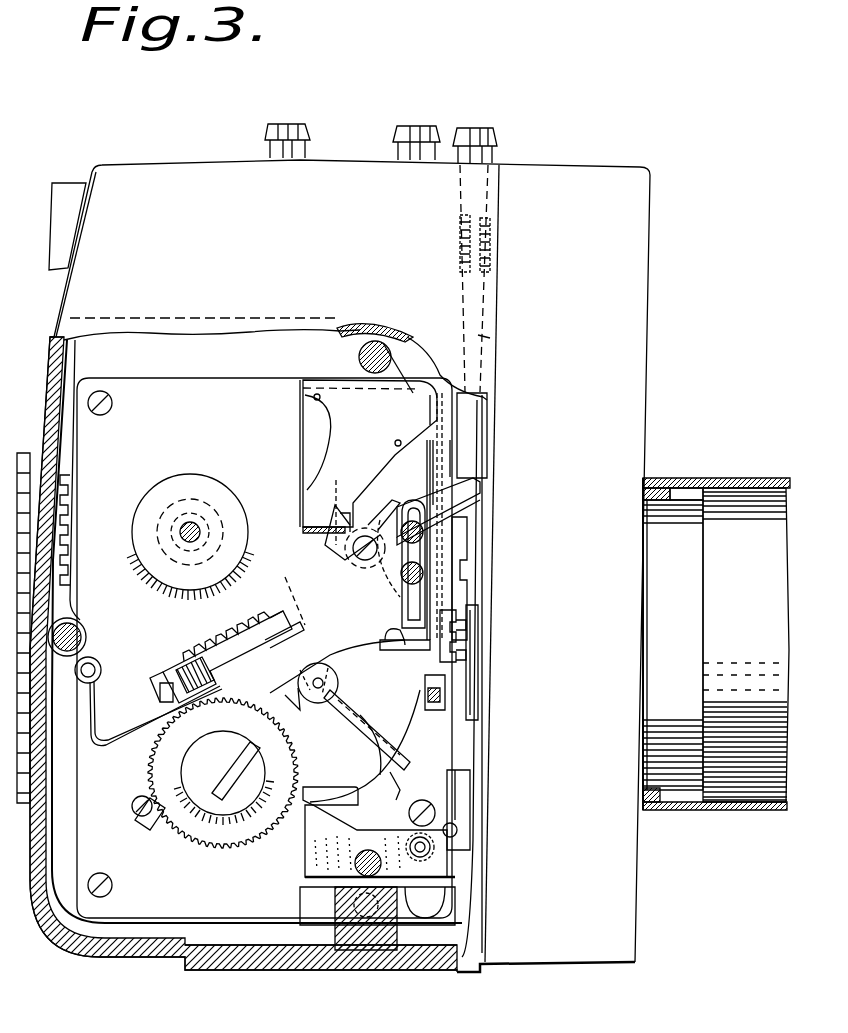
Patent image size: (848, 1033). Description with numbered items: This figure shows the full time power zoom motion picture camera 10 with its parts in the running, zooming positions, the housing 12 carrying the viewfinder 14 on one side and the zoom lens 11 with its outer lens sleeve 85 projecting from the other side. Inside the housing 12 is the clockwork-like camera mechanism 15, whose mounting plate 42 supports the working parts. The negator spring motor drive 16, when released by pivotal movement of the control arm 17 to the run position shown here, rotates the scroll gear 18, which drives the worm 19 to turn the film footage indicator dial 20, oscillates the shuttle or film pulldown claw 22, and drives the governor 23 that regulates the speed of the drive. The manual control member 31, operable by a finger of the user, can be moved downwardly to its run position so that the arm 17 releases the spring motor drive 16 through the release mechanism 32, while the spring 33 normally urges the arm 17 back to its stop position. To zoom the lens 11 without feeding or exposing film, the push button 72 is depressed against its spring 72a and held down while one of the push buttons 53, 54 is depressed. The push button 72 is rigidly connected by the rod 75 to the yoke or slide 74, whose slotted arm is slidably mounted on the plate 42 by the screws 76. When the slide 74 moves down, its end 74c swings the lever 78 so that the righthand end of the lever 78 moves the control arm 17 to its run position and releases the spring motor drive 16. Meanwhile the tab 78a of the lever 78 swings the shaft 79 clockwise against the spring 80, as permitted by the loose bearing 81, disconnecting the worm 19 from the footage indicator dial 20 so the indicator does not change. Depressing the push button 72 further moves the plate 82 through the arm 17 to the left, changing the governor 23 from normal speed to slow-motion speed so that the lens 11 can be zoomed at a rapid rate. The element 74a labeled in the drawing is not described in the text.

The full time power zoom motion picture camera 10 is at (162, 968).
The zoom lens 11 is at (731, 475).
The housing 12 is at (273, 965).
The viewfinder 14 is at (68, 190).
The camera mechanism 15 is at (163, 376).
The negator spring motor drive 16 is at (70, 515).
The control arm 17 is at (361, 757).
The scroll gear 18 is at (328, 650).
The worm 19 is at (172, 672).
The film footage indicator dial 20 is at (210, 825).
The shuttle or film pulldown claw 22 is at (470, 665).
The governor 23 is at (462, 815).
The manual control member 31 is at (442, 697).
The release mechanism 32 is at (448, 612).
The spring 33 is at (370, 735).
The mounting plate 42 is at (248, 403).
The push button 53 is at (432, 130).
The push button 54 is at (282, 130).
The push button 72 is at (485, 128).
The spring 72a is at (490, 240).
The yoke or slide 74 is at (477, 433).
The slide member arm 74a is at (425, 548).
The end of slide 74c is at (400, 648).
The rod 75 is at (478, 336).
The screws 76 is at (403, 572).
The lever 78 is at (275, 690).
The tab of lever 78a is at (212, 670).
The shaft 79 is at (192, 665).
The spring 80 is at (152, 690).
The loose bearing 81 is at (278, 595).
The plate 82 is at (318, 832).
The outer lens sleeve 85 is at (743, 768).